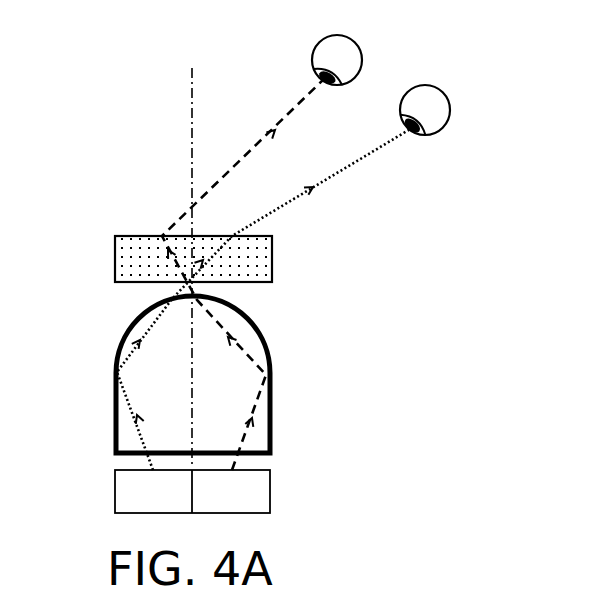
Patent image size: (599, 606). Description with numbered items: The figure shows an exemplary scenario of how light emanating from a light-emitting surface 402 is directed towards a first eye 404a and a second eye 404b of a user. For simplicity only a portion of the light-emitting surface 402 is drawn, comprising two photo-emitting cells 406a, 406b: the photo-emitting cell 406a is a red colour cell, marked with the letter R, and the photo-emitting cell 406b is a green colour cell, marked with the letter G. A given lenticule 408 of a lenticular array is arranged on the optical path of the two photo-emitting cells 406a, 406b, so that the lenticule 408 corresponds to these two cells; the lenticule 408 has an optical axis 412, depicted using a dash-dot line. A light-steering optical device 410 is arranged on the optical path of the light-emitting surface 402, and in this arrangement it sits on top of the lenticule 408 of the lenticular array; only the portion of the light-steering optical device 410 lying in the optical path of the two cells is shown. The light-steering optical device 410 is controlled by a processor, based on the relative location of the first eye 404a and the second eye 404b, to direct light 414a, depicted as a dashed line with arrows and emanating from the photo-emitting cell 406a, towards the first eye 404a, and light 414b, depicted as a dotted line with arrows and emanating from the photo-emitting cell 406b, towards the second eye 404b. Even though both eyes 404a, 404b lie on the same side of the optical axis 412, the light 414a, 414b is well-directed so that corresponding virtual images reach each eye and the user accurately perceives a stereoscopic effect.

The light-emitting surface 402 is at (110, 468).
The first eye 404a is at (346, 50).
The second eye 404b is at (440, 101).
The photo-emitting cell 406a is at (270, 490).
The photo-emitting cell 406b is at (115, 490).
The lenticule 408 is at (270, 345).
The light-steering optical device 410 is at (272, 258).
The optical axis 412 is at (192, 113).
The light 414a is at (282, 122).
The light 414b is at (375, 152).